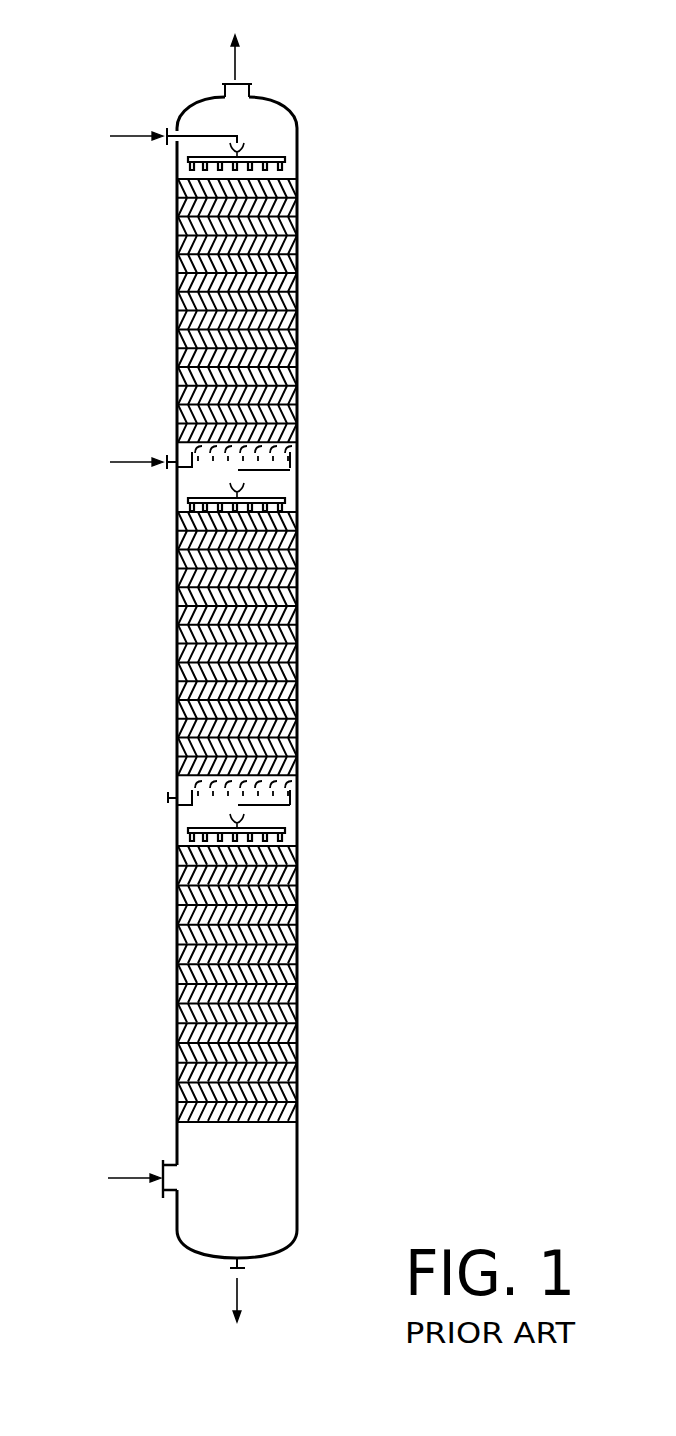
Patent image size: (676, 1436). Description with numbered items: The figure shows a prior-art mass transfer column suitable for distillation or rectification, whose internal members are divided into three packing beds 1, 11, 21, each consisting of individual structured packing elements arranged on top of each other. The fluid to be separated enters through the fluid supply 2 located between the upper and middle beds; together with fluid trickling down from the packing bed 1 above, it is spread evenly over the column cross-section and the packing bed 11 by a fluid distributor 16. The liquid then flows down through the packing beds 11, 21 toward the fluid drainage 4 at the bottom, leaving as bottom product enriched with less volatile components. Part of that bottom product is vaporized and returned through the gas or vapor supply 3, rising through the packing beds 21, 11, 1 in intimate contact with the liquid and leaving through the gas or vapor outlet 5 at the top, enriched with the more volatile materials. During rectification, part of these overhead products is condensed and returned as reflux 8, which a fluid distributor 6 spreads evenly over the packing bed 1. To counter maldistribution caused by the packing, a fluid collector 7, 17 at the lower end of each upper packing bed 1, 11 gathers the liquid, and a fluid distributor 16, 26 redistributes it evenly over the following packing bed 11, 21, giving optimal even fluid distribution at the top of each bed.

The packing bed 1 is at (170, 313).
The fluid supply 2 is at (132, 464).
The gas or vapor supply 3 is at (132, 1179).
The fluid drainage 4 is at (236, 1315).
The gas or vapor outlet 5 is at (234, 44).
The fluid distributor 6 is at (267, 157).
The fluid collector 7 is at (290, 452).
The reflux 8 is at (162, 141).
The packing bed 11 is at (170, 634).
The fluid distributor 16 is at (285, 497).
The fluid collector 17 is at (290, 785).
The packing bed 21 is at (170, 968).
The fluid distributor 26 is at (285, 830).